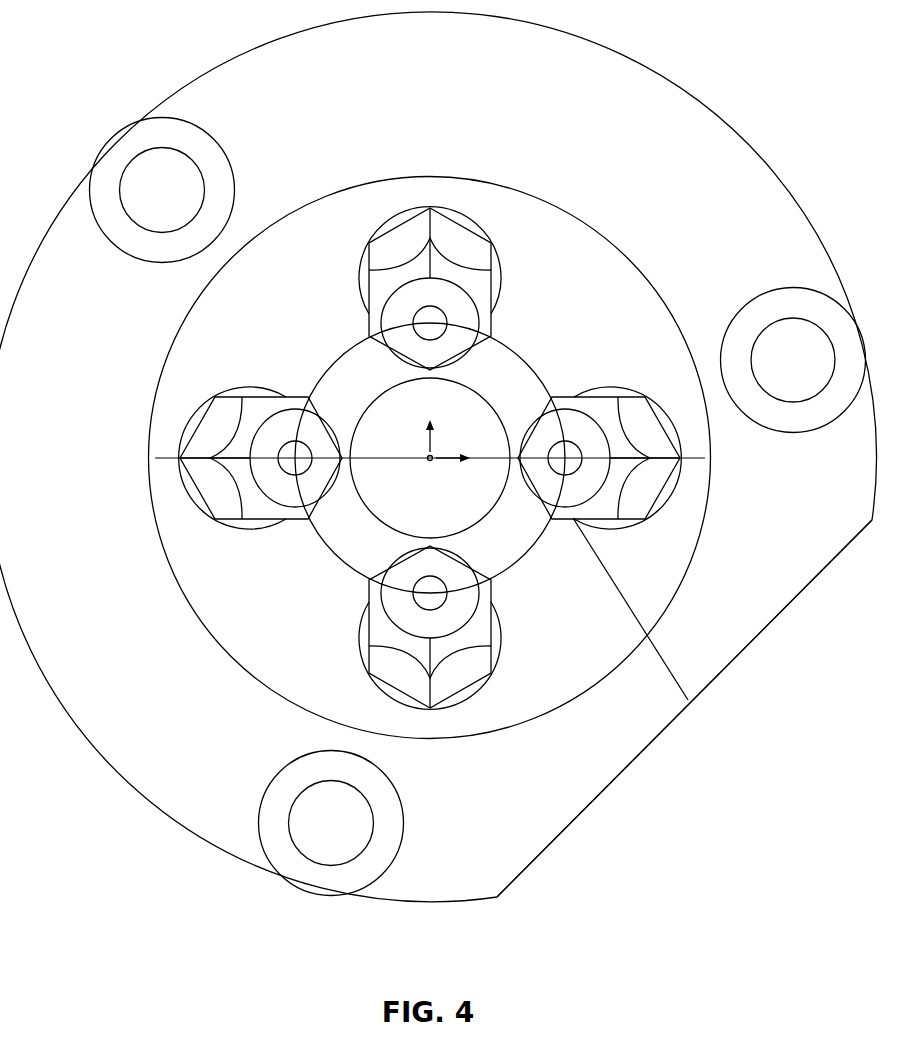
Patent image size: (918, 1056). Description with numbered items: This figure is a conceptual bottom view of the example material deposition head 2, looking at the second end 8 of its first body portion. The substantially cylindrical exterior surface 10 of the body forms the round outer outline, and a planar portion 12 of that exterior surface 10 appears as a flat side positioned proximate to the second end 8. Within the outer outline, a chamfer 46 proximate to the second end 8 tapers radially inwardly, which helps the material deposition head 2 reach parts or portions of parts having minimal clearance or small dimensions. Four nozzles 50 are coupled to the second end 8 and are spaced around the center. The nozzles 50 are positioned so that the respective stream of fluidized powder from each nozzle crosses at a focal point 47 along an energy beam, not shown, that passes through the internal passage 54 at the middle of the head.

The material deposition head 2 is at (85, 78).
The second end 8 is at (802, 117).
The exterior surface 10 is at (183, 826).
The planar portion 12 is at (821, 572).
The chamfer 46 is at (657, 107).
The focal point 47 is at (427, 464).
The nozzles 50 is at (650, 427).
The internal passage 54 is at (462, 420).